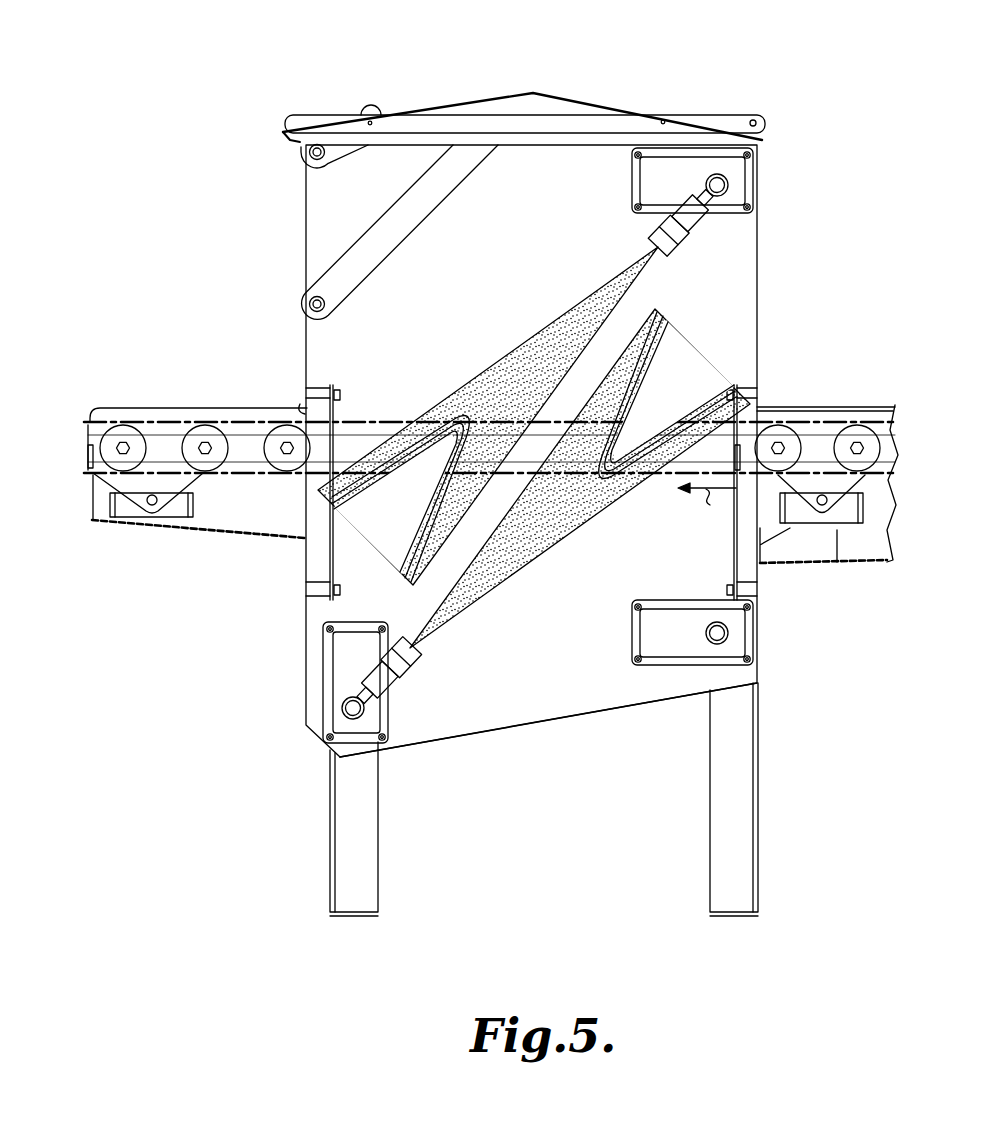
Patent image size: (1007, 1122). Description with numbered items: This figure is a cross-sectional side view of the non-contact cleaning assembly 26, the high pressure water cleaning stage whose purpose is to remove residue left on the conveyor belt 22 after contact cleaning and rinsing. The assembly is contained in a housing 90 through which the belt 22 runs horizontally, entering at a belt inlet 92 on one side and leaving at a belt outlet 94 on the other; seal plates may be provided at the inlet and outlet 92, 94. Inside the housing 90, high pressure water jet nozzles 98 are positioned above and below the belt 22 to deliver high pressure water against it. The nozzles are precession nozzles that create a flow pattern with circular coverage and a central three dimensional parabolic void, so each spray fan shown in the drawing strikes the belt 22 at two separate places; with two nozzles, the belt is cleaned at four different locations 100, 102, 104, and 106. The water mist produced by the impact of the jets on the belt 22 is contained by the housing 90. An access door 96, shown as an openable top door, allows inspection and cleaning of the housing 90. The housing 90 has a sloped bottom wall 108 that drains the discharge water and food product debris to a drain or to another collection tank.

The conveyor belt 22 is at (170, 408).
The non-contact cleaning assembly 26 is at (809, 78).
The housing 90 is at (758, 290).
The belt inlet 92 is at (755, 420).
The belt outlet 94 is at (307, 410).
The access door 96 is at (598, 107).
The high pressure water jet nozzles 98 is at (687, 235).
The belt cleaning location 100 is at (415, 420).
The belt cleaning location 102 is at (530, 420).
The belt cleaning location 104 is at (568, 422).
The belt cleaning location 106 is at (720, 420).
The sloped bottom wall 108 is at (572, 712).